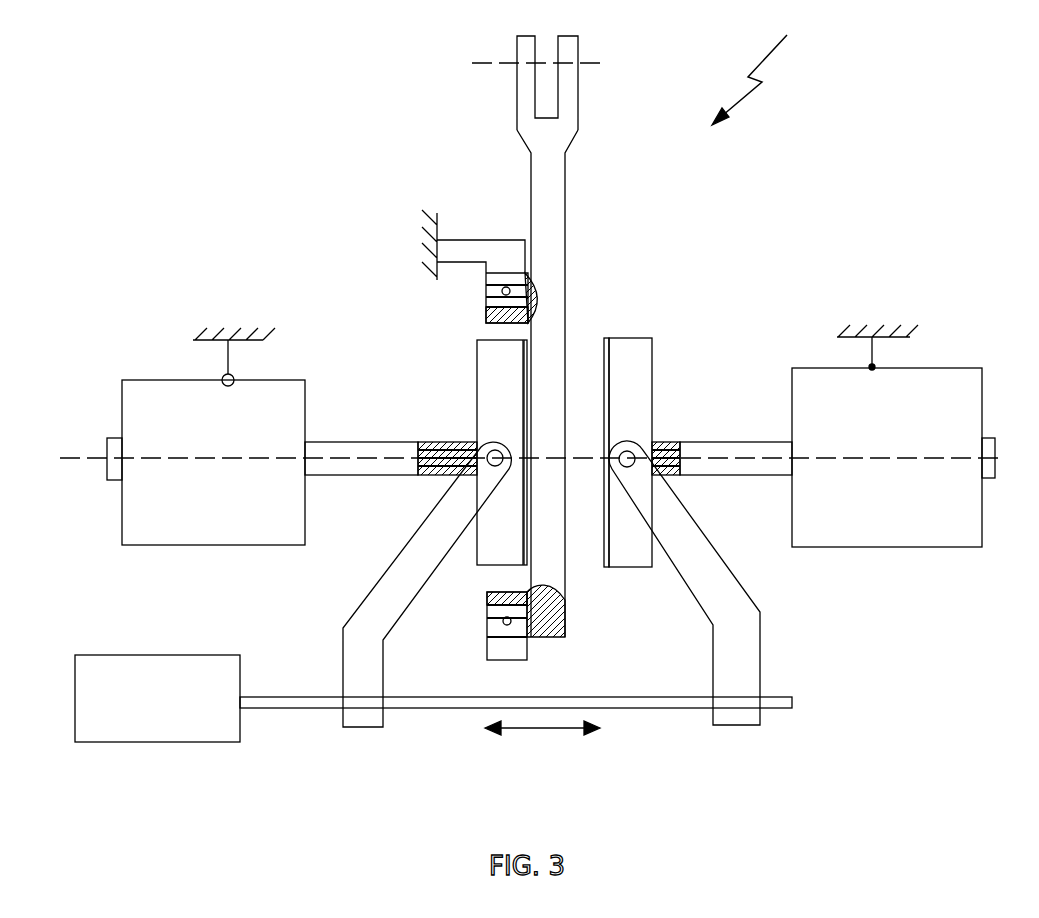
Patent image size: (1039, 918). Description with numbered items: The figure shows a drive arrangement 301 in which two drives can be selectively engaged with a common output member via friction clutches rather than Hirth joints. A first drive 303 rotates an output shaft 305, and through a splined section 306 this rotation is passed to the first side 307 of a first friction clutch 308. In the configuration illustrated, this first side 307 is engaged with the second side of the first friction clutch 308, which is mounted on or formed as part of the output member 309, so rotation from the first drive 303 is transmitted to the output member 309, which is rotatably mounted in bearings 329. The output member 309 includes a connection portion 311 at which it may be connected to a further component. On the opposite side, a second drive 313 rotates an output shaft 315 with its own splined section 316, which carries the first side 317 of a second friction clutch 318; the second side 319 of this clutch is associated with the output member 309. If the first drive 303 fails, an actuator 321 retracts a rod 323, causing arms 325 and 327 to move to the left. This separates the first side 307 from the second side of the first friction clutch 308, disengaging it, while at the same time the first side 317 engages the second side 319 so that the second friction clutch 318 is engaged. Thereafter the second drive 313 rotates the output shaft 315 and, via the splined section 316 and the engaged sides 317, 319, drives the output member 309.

The drive arrangement 301 is at (772, 73).
The first drive 303 is at (122, 380).
The output shaft 305 is at (395, 440).
The splined section 306 is at (455, 440).
The first clutch plate 307 is at (477, 340).
The first friction clutch 308 is at (500, 577).
The output member 309 is at (565, 258).
The connection portion 311 is at (580, 45).
The second drive 313 is at (982, 368).
The output shaft 315 is at (717, 442).
The splined section 316 is at (680, 442).
The first clutch plate 317 is at (652, 338).
The second friction clutch 318 is at (608, 590).
The second clutch plate 319 is at (565, 335).
The actuator 321 is at (142, 742).
The rod 323 is at (268, 708).
The arm 325 is at (385, 727).
The arm 327 is at (760, 725).
The bearings 329 is at (486, 291).